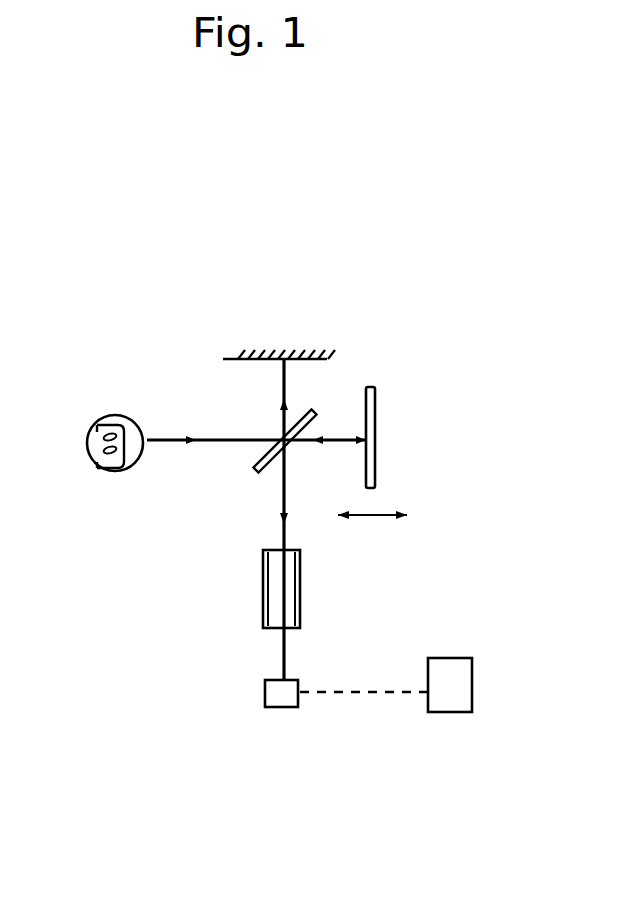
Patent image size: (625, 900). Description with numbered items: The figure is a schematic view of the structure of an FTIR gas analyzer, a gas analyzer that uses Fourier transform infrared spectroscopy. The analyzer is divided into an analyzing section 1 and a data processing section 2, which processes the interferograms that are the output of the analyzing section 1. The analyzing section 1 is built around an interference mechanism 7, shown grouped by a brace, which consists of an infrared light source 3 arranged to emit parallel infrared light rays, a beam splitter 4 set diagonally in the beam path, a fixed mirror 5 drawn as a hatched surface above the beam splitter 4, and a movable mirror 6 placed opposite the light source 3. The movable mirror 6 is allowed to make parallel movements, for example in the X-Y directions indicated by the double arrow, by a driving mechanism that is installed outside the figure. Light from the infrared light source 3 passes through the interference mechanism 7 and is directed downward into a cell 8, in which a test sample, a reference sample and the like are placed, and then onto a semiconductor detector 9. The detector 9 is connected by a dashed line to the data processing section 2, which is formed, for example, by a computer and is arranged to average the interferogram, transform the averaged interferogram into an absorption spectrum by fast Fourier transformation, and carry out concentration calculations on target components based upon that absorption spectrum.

The analyzing section 1 is at (137, 393).
The data processing section 2 is at (455, 658).
The infrared light source 3 is at (108, 471).
The beam splitter 4 is at (316, 410).
The fixed mirror 5 is at (327, 359).
The movable mirror 6 is at (376, 411).
The interference mechanism 7 is at (478, 267).
The cell 8 is at (301, 598).
The semiconductor detector 9 is at (263, 690).